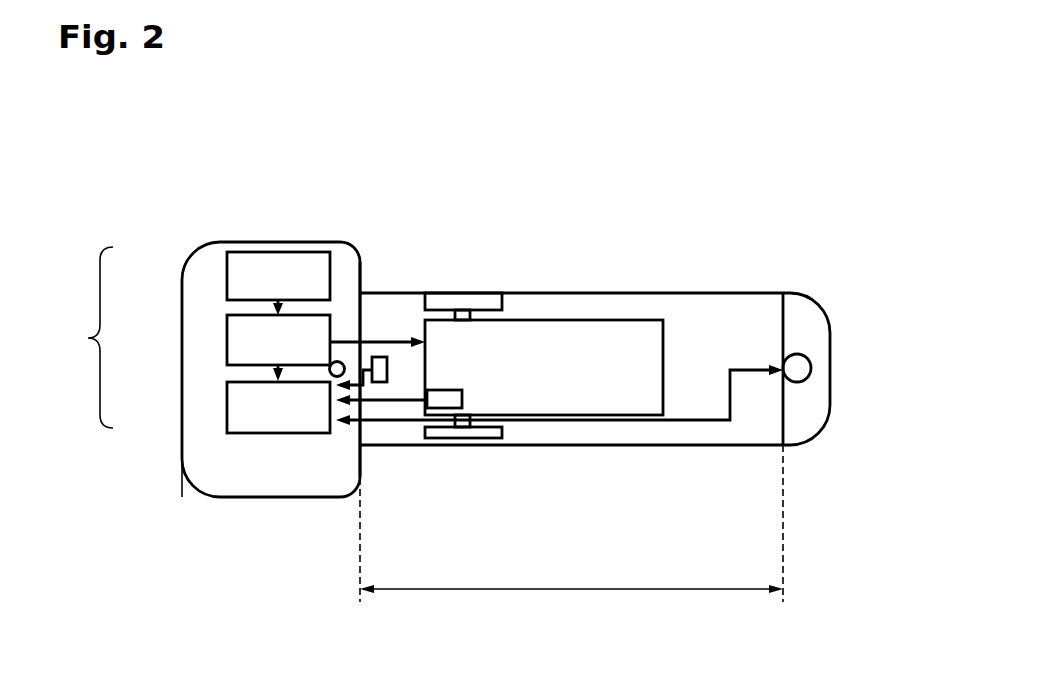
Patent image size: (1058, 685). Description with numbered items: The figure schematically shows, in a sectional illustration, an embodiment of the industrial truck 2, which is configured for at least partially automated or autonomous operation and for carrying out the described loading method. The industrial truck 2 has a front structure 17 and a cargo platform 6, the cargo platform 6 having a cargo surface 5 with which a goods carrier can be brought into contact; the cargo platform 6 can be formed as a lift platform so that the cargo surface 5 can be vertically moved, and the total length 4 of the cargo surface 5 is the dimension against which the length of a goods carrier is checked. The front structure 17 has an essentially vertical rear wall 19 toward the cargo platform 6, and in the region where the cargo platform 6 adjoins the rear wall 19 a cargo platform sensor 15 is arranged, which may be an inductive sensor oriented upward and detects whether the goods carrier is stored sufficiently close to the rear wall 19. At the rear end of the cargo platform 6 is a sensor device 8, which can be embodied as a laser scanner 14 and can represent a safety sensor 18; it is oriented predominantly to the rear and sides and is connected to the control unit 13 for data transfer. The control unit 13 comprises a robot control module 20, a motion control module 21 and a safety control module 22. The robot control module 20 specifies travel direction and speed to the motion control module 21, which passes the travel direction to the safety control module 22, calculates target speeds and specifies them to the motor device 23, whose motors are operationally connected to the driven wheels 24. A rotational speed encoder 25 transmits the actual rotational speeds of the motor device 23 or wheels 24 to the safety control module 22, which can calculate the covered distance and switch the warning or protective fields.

The industrial truck 2 is at (800, 213).
The total length 4 is at (613, 589).
The cargo surface 5 is at (595, 328).
The cargo platform 6 is at (727, 320).
The sensor device 8 is at (614, 448).
The control unit 13 is at (198, 340).
The laser scanner 14 is at (614, 448).
The cargo platform sensor 15 is at (382, 372).
The front structure 17 is at (271, 242).
The safety sensor 18 is at (800, 378).
The rear wall 19 is at (360, 266).
The robot control module 20 is at (232, 277).
The motion control module 21 is at (232, 342).
The safety control module 22 is at (232, 408).
The motor device 23 is at (604, 320).
The driven wheels 24 is at (492, 303).
The rotational speed encoder 25 is at (440, 403).